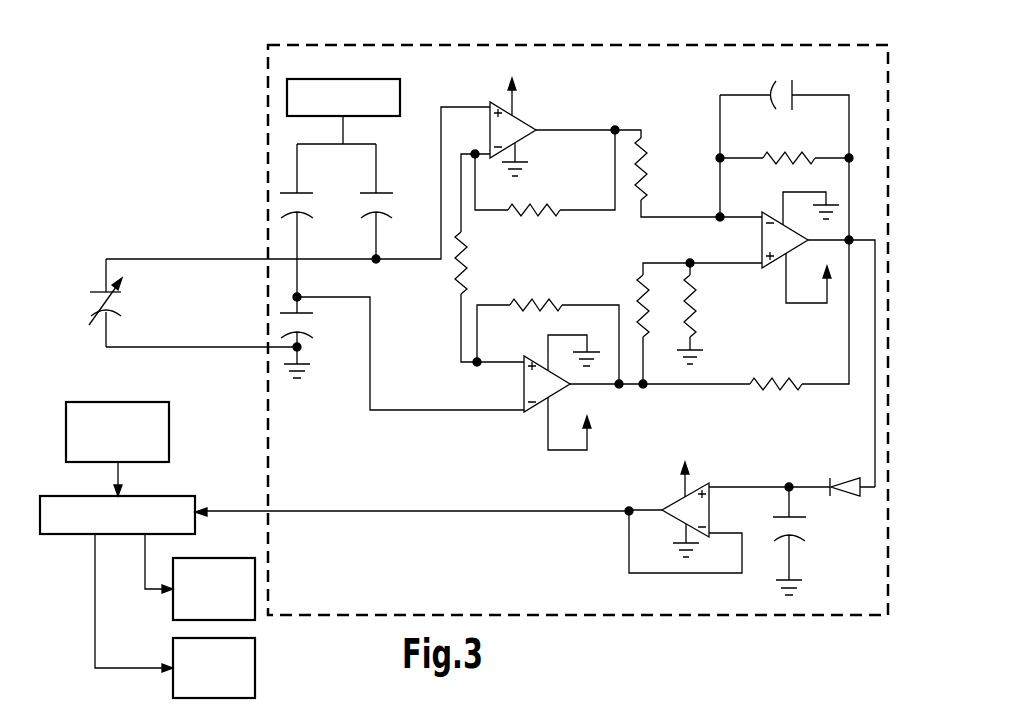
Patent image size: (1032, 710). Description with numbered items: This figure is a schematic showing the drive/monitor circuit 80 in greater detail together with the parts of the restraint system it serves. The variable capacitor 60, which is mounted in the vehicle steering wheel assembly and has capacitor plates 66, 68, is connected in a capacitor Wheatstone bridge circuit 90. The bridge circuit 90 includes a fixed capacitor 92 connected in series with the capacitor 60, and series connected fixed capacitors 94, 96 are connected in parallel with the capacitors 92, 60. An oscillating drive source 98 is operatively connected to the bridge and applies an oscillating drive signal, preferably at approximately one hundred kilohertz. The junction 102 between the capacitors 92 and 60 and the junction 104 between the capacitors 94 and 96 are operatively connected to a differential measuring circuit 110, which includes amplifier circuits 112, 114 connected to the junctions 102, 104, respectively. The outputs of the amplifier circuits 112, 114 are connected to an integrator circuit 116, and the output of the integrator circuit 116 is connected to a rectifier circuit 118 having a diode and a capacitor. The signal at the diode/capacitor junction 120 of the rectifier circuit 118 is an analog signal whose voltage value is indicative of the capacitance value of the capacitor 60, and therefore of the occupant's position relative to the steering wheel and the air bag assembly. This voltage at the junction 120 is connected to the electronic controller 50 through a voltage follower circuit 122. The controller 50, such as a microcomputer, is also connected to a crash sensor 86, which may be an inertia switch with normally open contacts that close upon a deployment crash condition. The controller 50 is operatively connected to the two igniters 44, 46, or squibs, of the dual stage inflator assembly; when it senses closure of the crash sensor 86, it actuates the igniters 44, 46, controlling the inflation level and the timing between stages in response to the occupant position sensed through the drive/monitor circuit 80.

The igniter 44 is at (198, 558).
The igniter 46 is at (256, 648).
The electronic controller 50 is at (173, 496).
The variable capacitor 60 is at (114, 305).
The capacitor plate 66 is at (99, 291).
The capacitor plate 68 is at (113, 311).
The drive/monitor circuit 80 is at (543, 630).
The crash sensor 86 is at (170, 430).
The capacitor Wheatstone bridge circuit 90 is at (343, 389).
The fixed capacitor 92 is at (377, 192).
The fixed capacitor 94 is at (298, 192).
The fixed capacitor 96 is at (310, 334).
The oscillating drive source 98 is at (401, 98).
The junction 102 is at (377, 257).
The junction 104 is at (298, 296).
The differential measuring circuit 110 is at (603, 461).
The amplifier circuit 112 is at (535, 96).
The amplifier circuit 114 is at (491, 388).
The integrator circuit 116 is at (697, 103).
The rectifier circuit 118 is at (843, 449).
The diode/capacitor junction 120 is at (789, 484).
The voltage follower circuit 122 is at (641, 491).